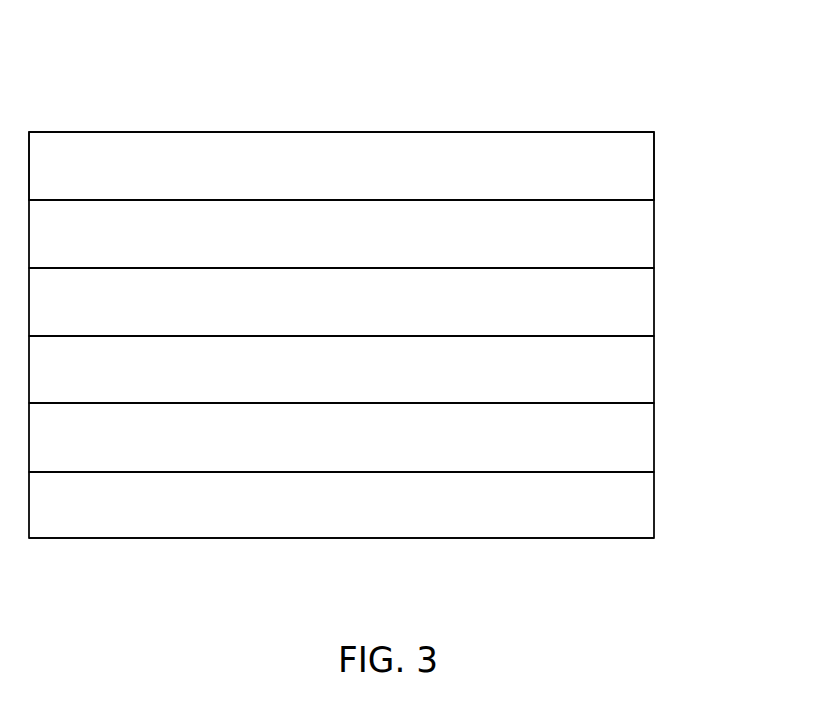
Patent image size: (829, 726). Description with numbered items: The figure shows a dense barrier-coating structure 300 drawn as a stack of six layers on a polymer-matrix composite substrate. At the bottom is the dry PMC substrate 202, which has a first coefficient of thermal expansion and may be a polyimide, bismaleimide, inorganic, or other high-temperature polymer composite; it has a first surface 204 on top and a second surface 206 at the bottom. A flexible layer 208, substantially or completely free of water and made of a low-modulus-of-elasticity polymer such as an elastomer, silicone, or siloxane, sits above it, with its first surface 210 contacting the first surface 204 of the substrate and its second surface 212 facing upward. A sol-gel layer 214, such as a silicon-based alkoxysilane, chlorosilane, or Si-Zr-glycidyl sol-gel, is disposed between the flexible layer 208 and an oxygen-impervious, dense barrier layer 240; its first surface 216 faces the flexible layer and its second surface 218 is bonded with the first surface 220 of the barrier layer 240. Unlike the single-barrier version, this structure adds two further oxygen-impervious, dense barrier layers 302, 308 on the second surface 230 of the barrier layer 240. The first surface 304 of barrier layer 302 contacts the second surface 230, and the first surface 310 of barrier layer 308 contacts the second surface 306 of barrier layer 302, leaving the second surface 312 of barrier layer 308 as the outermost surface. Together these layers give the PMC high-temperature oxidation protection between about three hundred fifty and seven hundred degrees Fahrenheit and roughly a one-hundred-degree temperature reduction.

The dense barrier-coating structure 300 is at (607, 72).
The second surface of oxygen-impervious, dense barrier layer 302 306 is at (654, 200).
The oxygen-impervious, dense barrier layer 308 is at (487, 160).
The second surface of oxygen-impervious, dense barrier layer 308 312 is at (383, 132).
The first surface of oxygen-impervious, dense barrier layer 308 310 is at (287, 200).
The oxygen-impervious, dense barrier layer 302 is at (636, 232).
The first surface of oxygen-impervious, dense barrier layer 302 304 is at (654, 268).
The second surface of barrier layer 240 230 is at (382, 268).
The oxygen-impervious, dense barrier layer 240 is at (640, 301).
The second surface of sol-gel layer 218 is at (654, 336).
The first surface of barrier layer 240 220 is at (287, 336).
The sol-gel layer 214 is at (640, 378).
The first surface of sol-gel layer 216 is at (654, 403).
The second surface of flexible layer 212 is at (447, 403).
The flexible layer 208 is at (640, 446).
The first surface of flexible layer 210 is at (654, 472).
The first surface of PMC substrate 204 is at (380, 472).
The polymer-matrix composite substrate 202 is at (640, 514).
The second surface of PMC substrate 206 is at (433, 538).